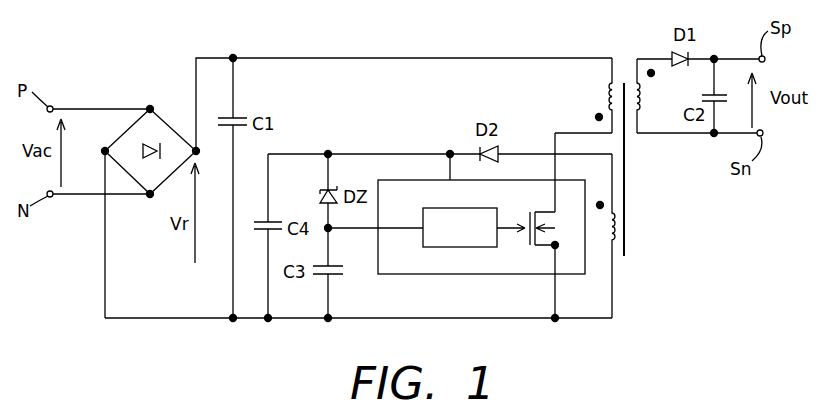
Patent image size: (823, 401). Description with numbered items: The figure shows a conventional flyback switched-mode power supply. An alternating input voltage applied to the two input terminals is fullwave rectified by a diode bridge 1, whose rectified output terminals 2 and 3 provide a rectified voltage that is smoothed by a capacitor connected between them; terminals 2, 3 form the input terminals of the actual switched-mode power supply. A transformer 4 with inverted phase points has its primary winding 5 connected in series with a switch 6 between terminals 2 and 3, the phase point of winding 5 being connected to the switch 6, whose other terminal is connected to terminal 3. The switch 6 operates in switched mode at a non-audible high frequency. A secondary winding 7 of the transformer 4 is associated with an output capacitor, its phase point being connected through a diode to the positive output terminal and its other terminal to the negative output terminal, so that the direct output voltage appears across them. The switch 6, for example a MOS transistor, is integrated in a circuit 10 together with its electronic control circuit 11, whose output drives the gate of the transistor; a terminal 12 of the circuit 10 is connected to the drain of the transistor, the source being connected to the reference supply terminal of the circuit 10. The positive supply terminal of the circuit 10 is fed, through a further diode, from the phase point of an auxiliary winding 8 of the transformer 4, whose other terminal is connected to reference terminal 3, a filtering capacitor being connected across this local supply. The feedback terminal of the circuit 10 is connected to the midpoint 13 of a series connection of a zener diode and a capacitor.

The diode bridge 1 is at (165, 122).
The rectified output terminal 2 is at (236, 56).
The rectified output terminal 3 is at (105, 147).
The transformer 4 is at (626, 47).
The primary winding 5 is at (605, 91).
The switch 6 is at (536, 210).
The secondary winding 7 is at (644, 96).
The auxiliary winding 8 is at (618, 235).
The integrated circuit 10 is at (490, 284).
The control circuit 11 is at (462, 248).
The terminal 12 is at (557, 177).
The midpoint 13 is at (326, 226).